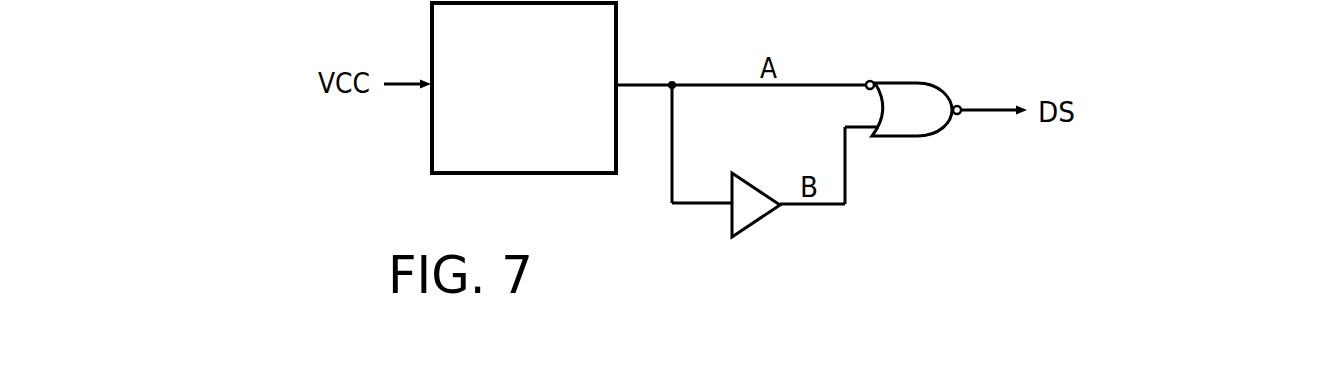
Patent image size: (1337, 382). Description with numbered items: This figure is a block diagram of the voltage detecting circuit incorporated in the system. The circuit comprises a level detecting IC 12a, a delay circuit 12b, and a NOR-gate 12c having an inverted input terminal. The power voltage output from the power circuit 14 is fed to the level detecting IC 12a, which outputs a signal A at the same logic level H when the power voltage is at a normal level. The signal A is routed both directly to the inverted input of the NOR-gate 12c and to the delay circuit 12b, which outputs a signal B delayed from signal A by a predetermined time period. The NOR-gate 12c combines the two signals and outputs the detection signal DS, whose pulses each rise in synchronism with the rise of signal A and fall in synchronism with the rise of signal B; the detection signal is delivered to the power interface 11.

The level detecting IC 12a is at (616, 34).
The delay circuit 12b is at (752, 224).
The NOR-gate 12c is at (910, 137).
The power circuit 14 is at (202, 83).
The power interface 11 is at (1198, 112).